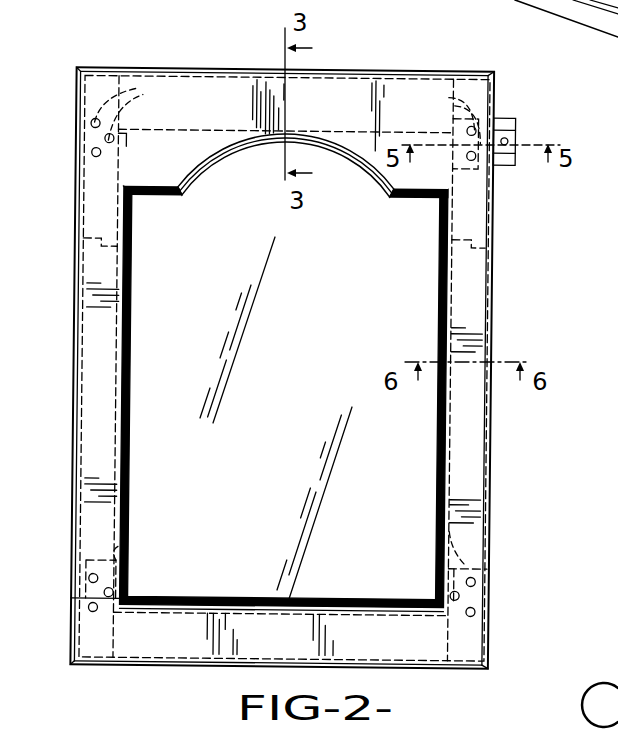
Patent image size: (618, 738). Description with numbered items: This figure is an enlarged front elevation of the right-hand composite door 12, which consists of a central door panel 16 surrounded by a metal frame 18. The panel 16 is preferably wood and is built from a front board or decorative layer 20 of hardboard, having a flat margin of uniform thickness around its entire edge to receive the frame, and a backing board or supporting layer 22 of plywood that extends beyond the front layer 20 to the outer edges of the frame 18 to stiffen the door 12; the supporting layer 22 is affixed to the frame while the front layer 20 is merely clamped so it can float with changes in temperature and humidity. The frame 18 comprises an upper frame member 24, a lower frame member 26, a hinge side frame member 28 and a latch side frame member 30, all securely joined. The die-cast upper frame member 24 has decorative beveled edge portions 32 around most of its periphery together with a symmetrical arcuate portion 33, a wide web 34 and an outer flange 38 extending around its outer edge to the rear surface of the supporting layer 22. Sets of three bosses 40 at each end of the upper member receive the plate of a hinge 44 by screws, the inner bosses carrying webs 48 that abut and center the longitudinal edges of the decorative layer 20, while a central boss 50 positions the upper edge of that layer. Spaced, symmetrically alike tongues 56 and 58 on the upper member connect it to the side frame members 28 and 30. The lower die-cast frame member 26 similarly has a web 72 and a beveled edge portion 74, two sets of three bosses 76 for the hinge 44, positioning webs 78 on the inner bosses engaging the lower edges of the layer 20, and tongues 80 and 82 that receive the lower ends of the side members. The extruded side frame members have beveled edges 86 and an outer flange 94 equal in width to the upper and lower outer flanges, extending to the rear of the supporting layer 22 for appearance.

The composite door 12 is at (174, 40).
The central door panel 16 is at (263, 489).
The metal frame 18 is at (70, 588).
The front board or decorative layer 20 is at (238, 128).
The backing board or supporting layer 22 is at (492, 497).
The upper frame member 24 is at (506, 99).
The lower frame member 26 is at (188, 671).
The hinge side frame member 28 is at (506, 430).
The latch side frame member 30 is at (68, 435).
The beveled edge portions 32 is at (121, 66).
The symmetrical arcuate portion 33 is at (241, 150).
The wide web 34 is at (347, 165).
The outer flange 38 is at (383, 71).
The bosses 40 is at (287, 122).
The hinge 44 is at (518, 138).
The webs 48 is at (122, 159).
The central boss 50 is at (286, 126).
The tongue 56 is at (497, 258).
The tongue 58 is at (100, 243).
The web 72 is at (358, 650).
The beveled edge portion 74 is at (439, 676).
The bosses 76 is at (494, 601).
The positioning webs 78 is at (470, 581).
The tongue 80 is at (446, 549).
The tongue 82 is at (130, 546).
The beveled edges 86 is at (438, 313).
The outer flange 94 is at (498, 347).